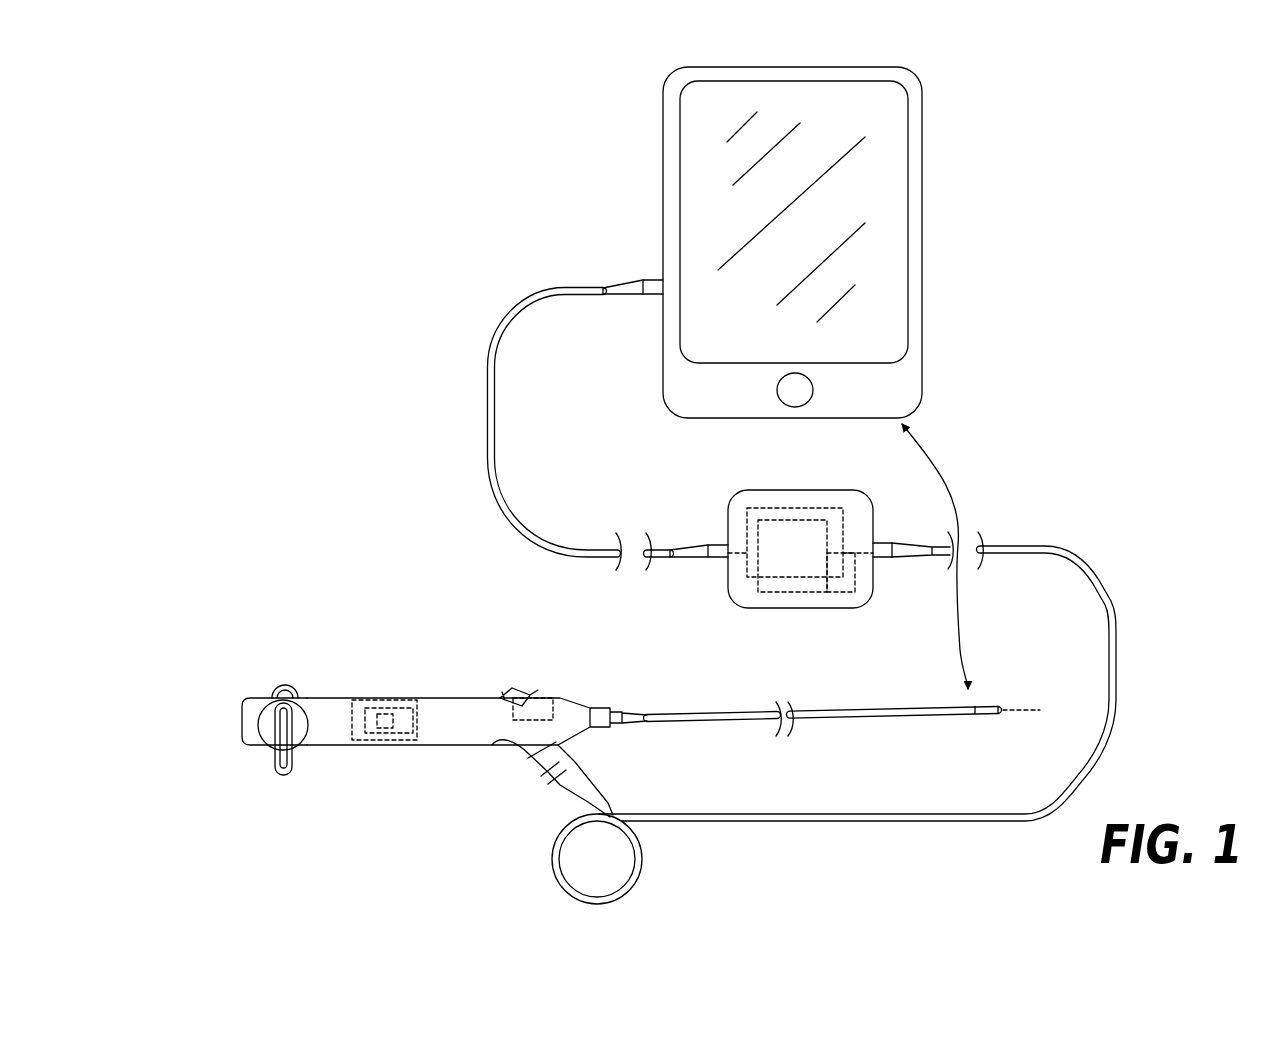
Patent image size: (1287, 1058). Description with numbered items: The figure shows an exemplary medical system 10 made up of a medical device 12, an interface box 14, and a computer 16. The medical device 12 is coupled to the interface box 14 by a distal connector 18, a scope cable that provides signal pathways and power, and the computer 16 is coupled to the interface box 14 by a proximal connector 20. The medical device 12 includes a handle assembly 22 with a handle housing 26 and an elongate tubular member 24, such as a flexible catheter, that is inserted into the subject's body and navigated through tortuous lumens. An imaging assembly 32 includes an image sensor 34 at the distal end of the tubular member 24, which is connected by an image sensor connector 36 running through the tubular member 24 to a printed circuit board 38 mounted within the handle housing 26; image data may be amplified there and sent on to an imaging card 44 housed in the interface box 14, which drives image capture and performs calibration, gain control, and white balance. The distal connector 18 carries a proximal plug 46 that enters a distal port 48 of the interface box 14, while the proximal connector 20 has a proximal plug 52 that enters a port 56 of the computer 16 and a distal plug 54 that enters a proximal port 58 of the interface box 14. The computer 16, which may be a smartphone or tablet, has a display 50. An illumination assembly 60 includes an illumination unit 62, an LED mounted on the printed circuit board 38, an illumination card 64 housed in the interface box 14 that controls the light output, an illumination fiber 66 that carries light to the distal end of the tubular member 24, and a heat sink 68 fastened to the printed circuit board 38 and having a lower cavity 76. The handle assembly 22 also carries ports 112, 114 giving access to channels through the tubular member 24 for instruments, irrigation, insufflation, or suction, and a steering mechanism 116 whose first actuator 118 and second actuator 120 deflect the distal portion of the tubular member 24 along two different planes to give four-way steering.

The medical system 10 is at (430, 232).
The medical device 12 is at (610, 716).
The interface box 14 is at (775, 535).
The computer 16 is at (753, 225).
The distal connector 18 is at (808, 814).
The proximal connector 20 is at (488, 480).
The handle assembly 22 is at (408, 716).
The elongate tubular member 24 is at (848, 689).
The handle housing 26 is at (342, 737).
The imaging assembly 32 is at (870, 612).
The image sensor 34 is at (1003, 708).
The image sensor connector 36 is at (978, 700).
The printed circuit board 38 is at (382, 698).
The imaging card 44 is at (756, 576).
The proximal plug 46 is at (911, 546).
The distal port 48 is at (876, 562).
The display 50 is at (840, 118).
The proximal plug 52 is at (620, 249).
The distal plug 54 is at (696, 550).
The port 56 is at (660, 277).
The proximal port 58 is at (725, 546).
The illumination assembly 60 is at (424, 714).
The illumination unit 62 is at (386, 728).
The illumination card 64 is at (772, 518).
The illumination fiber 66 is at (1003, 712).
The heat sink 68 is at (415, 707).
The lower cavity 76 is at (398, 738).
The port 112 is at (500, 742).
The port 114 is at (522, 690).
The steering mechanism 116 is at (256, 725).
The first actuator 118 is at (285, 777).
The second actuator 120 is at (283, 670).